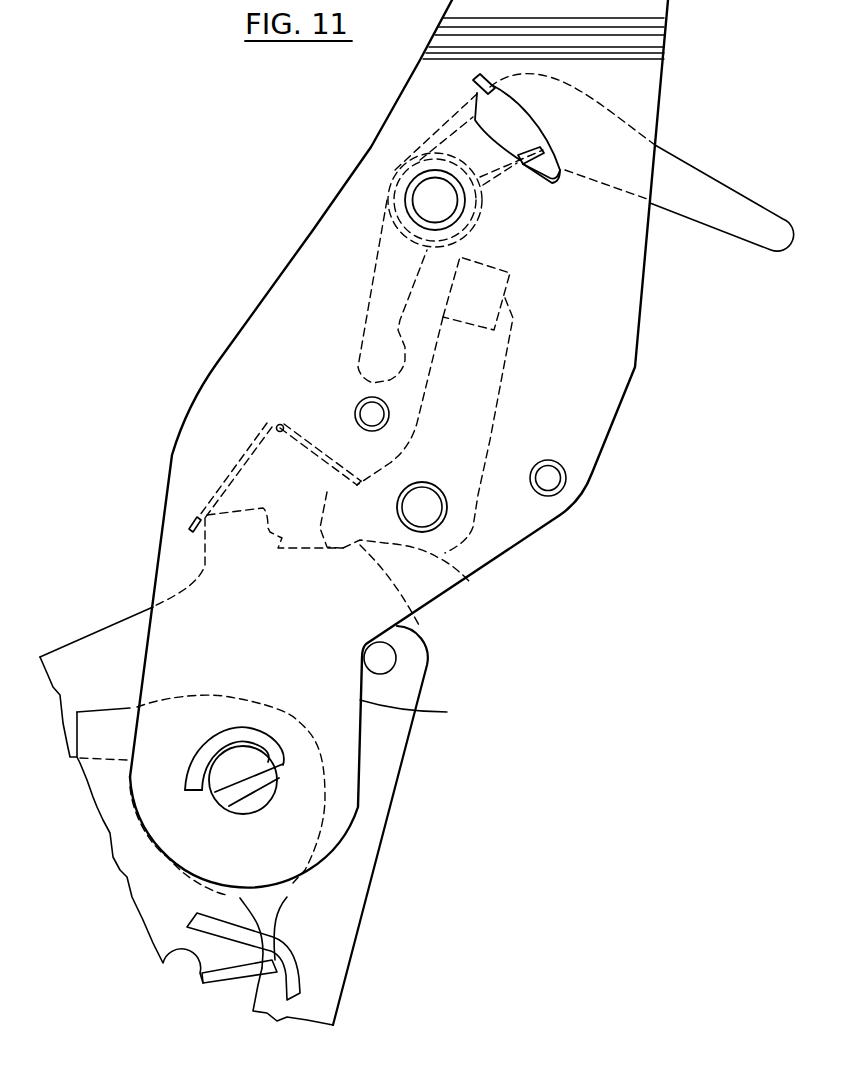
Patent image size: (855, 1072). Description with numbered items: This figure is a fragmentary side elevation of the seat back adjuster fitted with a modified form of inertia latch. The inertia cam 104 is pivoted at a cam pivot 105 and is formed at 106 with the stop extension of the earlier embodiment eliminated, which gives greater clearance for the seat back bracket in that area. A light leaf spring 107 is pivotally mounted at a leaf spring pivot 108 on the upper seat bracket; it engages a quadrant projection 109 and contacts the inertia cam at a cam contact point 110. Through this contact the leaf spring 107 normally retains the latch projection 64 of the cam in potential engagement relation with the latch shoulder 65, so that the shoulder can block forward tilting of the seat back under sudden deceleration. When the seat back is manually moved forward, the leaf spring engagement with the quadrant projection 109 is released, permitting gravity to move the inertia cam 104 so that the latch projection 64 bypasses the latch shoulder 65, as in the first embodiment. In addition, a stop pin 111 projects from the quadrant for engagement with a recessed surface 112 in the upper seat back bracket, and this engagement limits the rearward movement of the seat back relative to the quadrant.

The latch projection 64 is at (322, 530).
The latch shoulder 65 is at (280, 548).
The inertia cam 104 is at (468, 400).
The cam pivot 105 is at (430, 513).
The cam formation 106 is at (467, 580).
The leaf spring 107 is at (230, 462).
The leaf spring pivot 108 is at (282, 418).
The quadrant projection 109 is at (188, 513).
The cam contact point 110 is at (340, 487).
The stop pin 111 is at (385, 662).
The recessed surface 112 is at (413, 825).